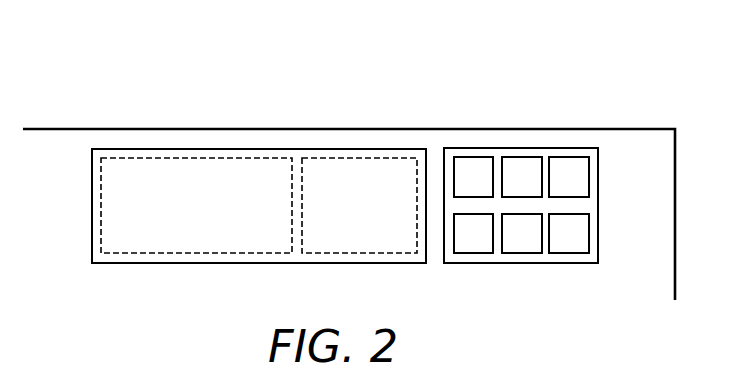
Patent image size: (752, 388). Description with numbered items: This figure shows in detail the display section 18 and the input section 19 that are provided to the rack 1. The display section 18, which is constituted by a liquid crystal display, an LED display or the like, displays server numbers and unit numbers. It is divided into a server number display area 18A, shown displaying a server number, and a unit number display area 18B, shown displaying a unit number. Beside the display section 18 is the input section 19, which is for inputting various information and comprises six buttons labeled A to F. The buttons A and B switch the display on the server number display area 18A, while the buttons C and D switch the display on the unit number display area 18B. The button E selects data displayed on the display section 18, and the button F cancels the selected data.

The image forming apparatus housing 1 is at (577, 130).
The display section 18 is at (283, 148).
The server number display area 18A is at (224, 157).
The unit number display area 18B is at (367, 157).
The input section 19 is at (482, 148).